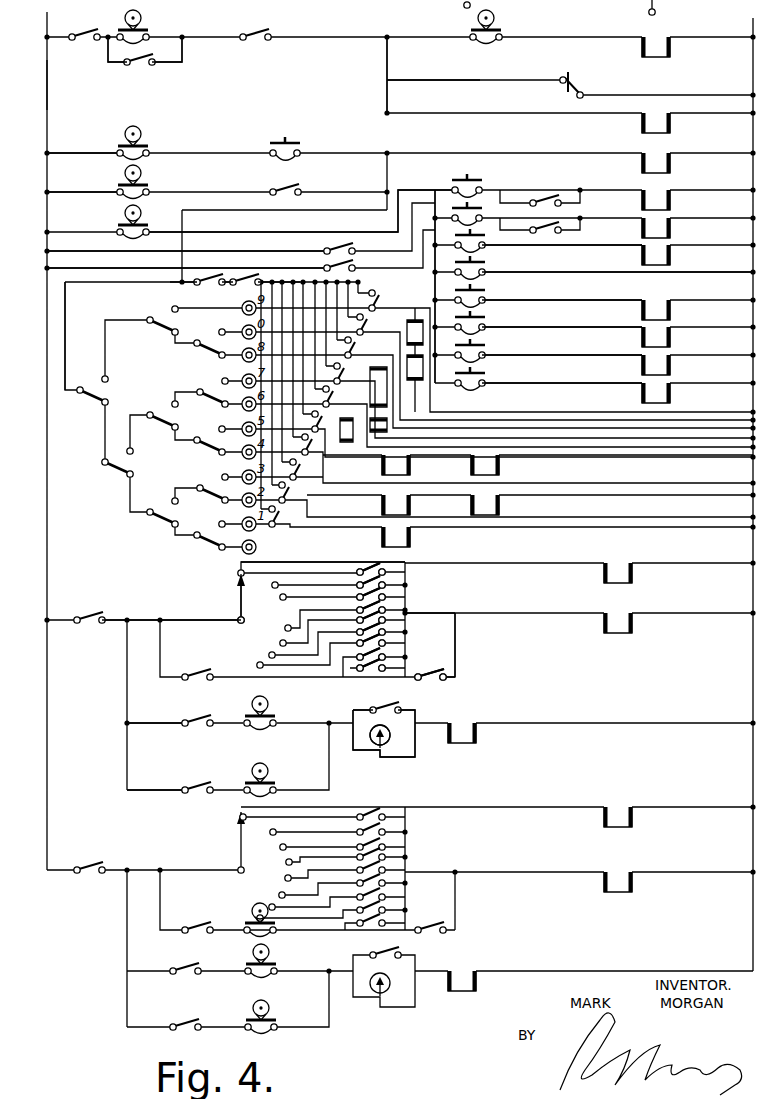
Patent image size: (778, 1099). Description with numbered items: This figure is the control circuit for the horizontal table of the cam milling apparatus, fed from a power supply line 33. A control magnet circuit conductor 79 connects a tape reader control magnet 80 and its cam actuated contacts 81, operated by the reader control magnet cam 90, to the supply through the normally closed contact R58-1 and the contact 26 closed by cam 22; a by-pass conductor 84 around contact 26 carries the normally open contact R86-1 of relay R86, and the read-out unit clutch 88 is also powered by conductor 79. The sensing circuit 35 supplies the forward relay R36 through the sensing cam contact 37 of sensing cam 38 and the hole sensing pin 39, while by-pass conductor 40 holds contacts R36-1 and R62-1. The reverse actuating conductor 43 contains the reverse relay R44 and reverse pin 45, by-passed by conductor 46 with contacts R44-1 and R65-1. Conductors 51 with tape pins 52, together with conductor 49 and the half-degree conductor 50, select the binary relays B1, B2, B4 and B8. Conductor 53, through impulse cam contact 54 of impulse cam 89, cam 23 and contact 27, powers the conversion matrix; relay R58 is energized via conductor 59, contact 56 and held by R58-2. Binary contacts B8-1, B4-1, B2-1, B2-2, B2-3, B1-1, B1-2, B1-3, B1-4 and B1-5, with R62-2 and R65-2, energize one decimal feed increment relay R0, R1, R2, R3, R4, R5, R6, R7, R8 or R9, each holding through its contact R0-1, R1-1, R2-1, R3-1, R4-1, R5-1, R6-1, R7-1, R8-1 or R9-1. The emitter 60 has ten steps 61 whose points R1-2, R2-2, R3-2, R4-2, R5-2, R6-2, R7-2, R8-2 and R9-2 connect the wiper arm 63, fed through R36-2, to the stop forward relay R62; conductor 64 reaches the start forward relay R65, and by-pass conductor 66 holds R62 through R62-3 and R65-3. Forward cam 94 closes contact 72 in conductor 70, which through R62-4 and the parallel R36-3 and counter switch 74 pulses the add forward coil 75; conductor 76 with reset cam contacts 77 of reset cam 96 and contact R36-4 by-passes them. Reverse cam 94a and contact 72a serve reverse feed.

The cam 22 is at (141, 20).
The contact 26 is at (133, 45).
The by-pass circuit conductor 84 is at (120, 66).
The contact of relay R86 R86-1 is at (146, 68).
The power supply line 33 is at (47, 72).
The contact of relay R58 R58-1 is at (262, 30).
The control magnet circuit conductor 79 is at (345, 38).
The reader control magnet cam 90 is at (494, 18).
The control magnet cam actuated contacts 81 is at (486, 46).
The tape reader control magnet 80 is at (657, 58).
The read-out unit clutch 88 is at (575, 82).
The relay R86 is at (657, 133).
The impulse cam 89 is at (125, 136).
The circuit conductor 59 is at (66, 185).
The impulse cam contact 54 is at (138, 162).
The cam 23 is at (125, 176).
The cam contact 27 is at (142, 200).
The tape actuated contact 56 is at (285, 156).
The contact of relay R58 R58-2 is at (292, 186).
The relay R58 is at (657, 173).
The sensing circuit 35 is at (226, 224).
The hole sensing pin 39 is at (480, 190).
The contact of forward relay R36-1 is at (545, 195).
The forward relay R36 is at (664, 205).
The sensing cam 38 is at (125, 216).
The sensing cam contact 37 is at (124, 240).
The by-pass conductor 40 is at (213, 251).
The circuit conductor 46 is at (213, 268).
The contact of stop forward relay R62-1 is at (330, 242).
The contact of start forward relay R65-1 is at (330, 260).
The reverse actuating circuit conductor 43 is at (435, 218).
The reverse hole sensing pin 45 is at (480, 215).
The contact of reverse relay R44-1 is at (558, 234).
The reverse relay R44 is at (664, 232).
The pins 52 is at (476, 316).
The conductor 49 is at (512, 258).
The circuit conductor 50 is at (512, 286).
The conductors 51 is at (562, 351).
The binary relay B8 is at (655, 313).
The binary relay B4 is at (664, 340).
The binary relay B2 is at (664, 368).
The binary relay B1 is at (664, 396).
The holding contact of relay R9 R9-1 is at (392, 299).
The holding contact of relay R0 R0-1 is at (378, 324).
The holding contact of relay R8 R8-1 is at (366, 347).
The holding contact of relay R7 R7-1 is at (355, 373).
The holding contact of relay R6 R6-1 is at (344, 396).
The holding contact of relay R5 R5-1 is at (332, 420).
The holding contact of relay R4 R4-1 is at (320, 444).
The holding contact of relay R3 R3-1 is at (308, 469).
The holding contact of relay R2 R2-1 is at (297, 492).
The holding contact of relay R1 R1-1 is at (287, 516).
The decimal feed increment relay R9 is at (415, 328).
The decimal feed increment relay R0 is at (415, 377).
The decimal feed increment relay R8 is at (387, 390).
The decimal feed increment relay R7 is at (372, 440).
The decimal feed increment relay R6 is at (345, 445).
The decimal feed increment relay R5 is at (405, 465).
The decimal feed increment relay R4 is at (494, 465).
The decimal feed increment relay R3 is at (405, 505).
The decimal feed increment relay R2 is at (494, 505).
The decimal feed increment relay R1 is at (405, 537).
The contact of stop forward relay R62-2 is at (200, 290).
The contact of start forward relay R65-2 is at (255, 285).
The contact of binary relay B1 B1-5 is at (177, 320).
The contact of binary relay B2 B2-3 is at (219, 343).
The contact of binary relay B8 B8-1 is at (106, 367).
The conductor 53 is at (63, 378).
The contact of binary relay B1 B1-4 is at (221, 392).
The contact of binary relay B2 B2-2 is at (175, 415).
The contact of binary relay B1 B1-3 is at (219, 440).
The contact of binary relay B4 B4-1 is at (130, 462).
The contact of binary relay B1 B1-2 is at (221, 488).
The contact of binary relay B2 B2-1 is at (175, 512).
The contact of binary relay B1 B1-1 is at (219, 535).
The contact of forward relay R36-2 is at (90, 612).
The circuit conductor 64 is at (290, 562).
The wiper arm 63 is at (238, 600).
The positions or steps 61 is at (253, 612).
The emitter 60 is at (236, 625).
The relay point of relay R1 R1-2 is at (382, 572).
The relay point of relay R2 R2-2 is at (382, 585).
The relay point of relay R3 R3-2 is at (382, 597).
The relay point of relay R4 R4-2 is at (382, 610).
The relay point of relay R5 R5-2 is at (382, 620).
The relay point of relay R6 R6-2 is at (382, 632).
The relay point of relay R7 R7-2 is at (382, 643).
The by-pass circuit conductor 66 is at (455, 660).
The start forward relay R65 is at (625, 583).
The stop forward relay R62 is at (625, 633).
The contact of start forward relay R65-3 is at (197, 683).
The forward cam 94 is at (268, 700).
The relay point of relay R8 R8-2 is at (360, 657).
The relay point of relay R9 R9-2 is at (365, 672).
The contact of forward relay R36-3 is at (390, 702).
The contact of stop forward relay R62-3 is at (430, 683).
The forward cam circuit conductor 70 is at (160, 723).
The contact of stop forward relay R62-4 is at (198, 728).
The forward cam contact 72 is at (255, 733).
The counter actuated switch 74 is at (375, 745).
The add forward coil 75 is at (462, 744).
The circuit conductor 76 is at (157, 790).
The contact of forward relay R36-4 is at (198, 795).
The reset cam 96 is at (268, 768).
The reset cam actuated contacts 77 is at (260, 798).
The reverse cam 94a is at (280, 904).
The reverse cam contact 72a is at (262, 975).